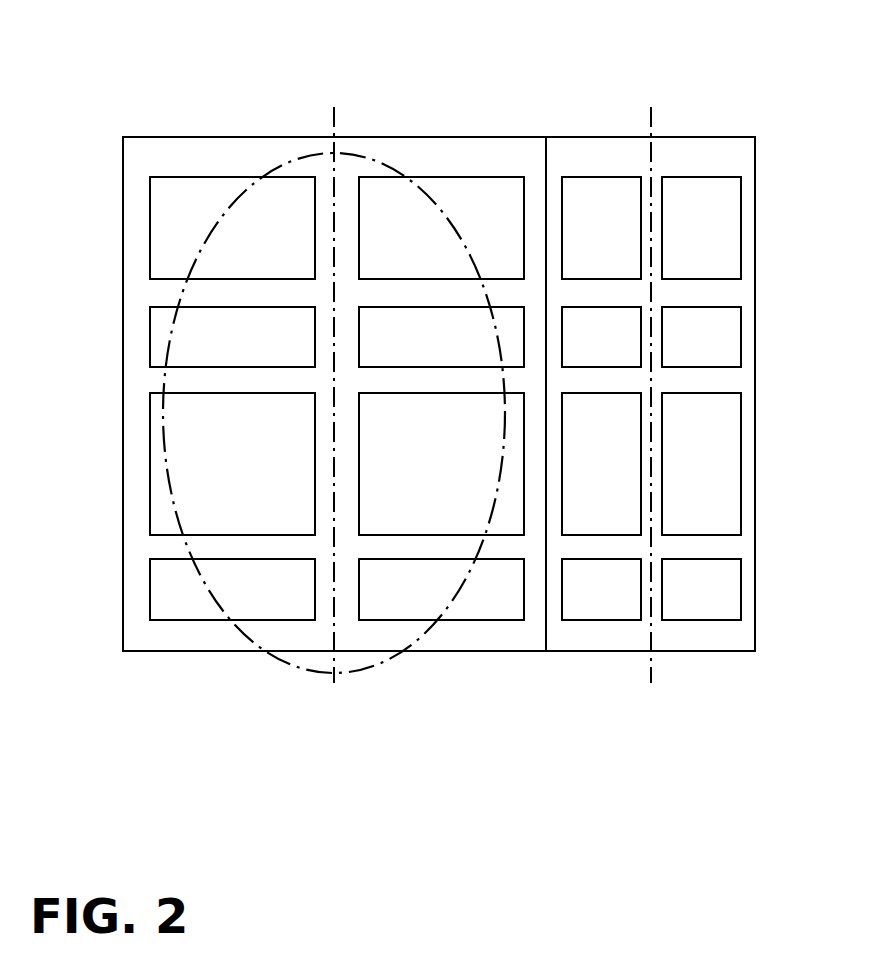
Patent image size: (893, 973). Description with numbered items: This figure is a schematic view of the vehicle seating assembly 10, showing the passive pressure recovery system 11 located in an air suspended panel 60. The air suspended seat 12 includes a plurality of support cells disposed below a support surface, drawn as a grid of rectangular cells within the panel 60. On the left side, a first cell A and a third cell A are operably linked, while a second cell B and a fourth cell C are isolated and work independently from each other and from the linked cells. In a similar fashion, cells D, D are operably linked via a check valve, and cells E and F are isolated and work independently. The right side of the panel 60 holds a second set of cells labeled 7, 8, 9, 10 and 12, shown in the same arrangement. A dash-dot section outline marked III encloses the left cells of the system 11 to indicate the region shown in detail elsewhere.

The passive pressure recovery system 11 is at (96, 98).
The air suspended panel 60 is at (470, 137).
The cell region 7 is at (601, 356).
The cell region 8 is at (601, 337).
The cell region 9 is at (601, 589).
The vehicle seating assembly 10 is at (701, 356).
The air suspended seat 12 is at (701, 589).
The section line III of FIG. 3 III is at (287, 661).